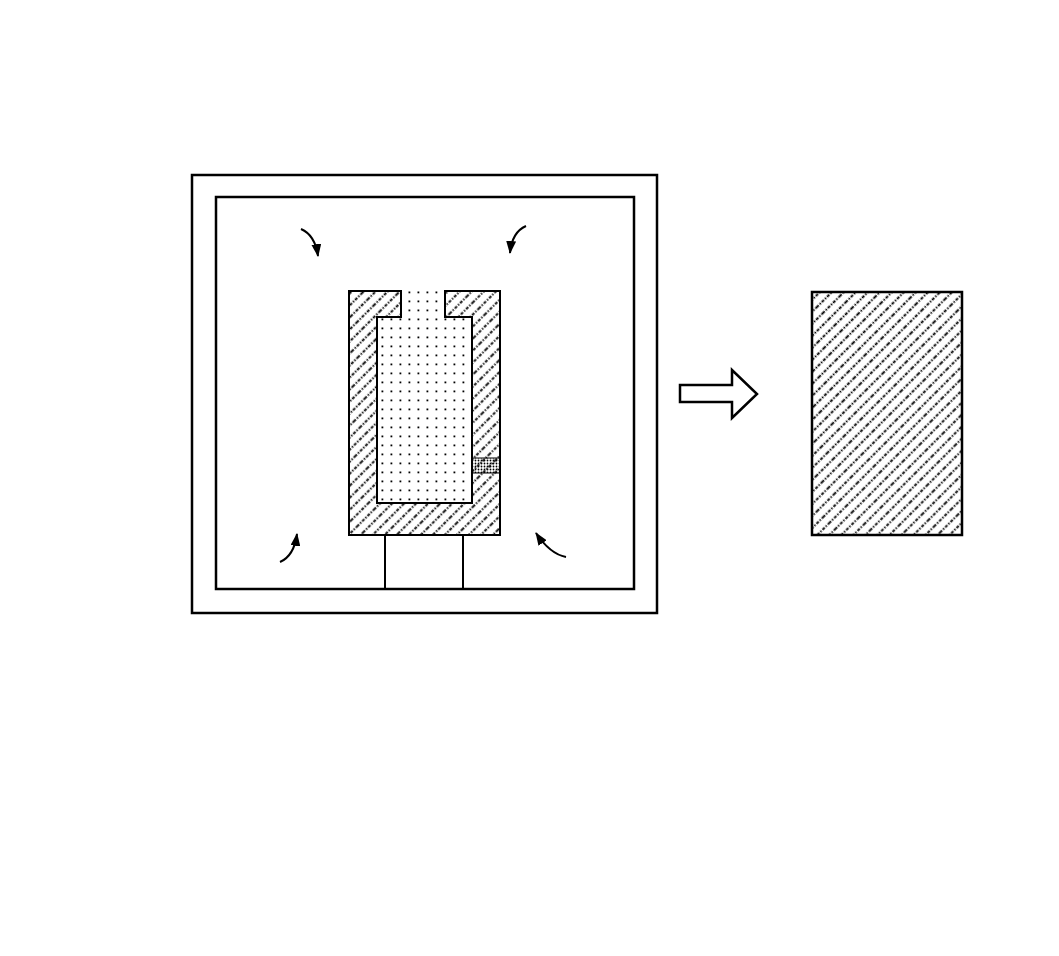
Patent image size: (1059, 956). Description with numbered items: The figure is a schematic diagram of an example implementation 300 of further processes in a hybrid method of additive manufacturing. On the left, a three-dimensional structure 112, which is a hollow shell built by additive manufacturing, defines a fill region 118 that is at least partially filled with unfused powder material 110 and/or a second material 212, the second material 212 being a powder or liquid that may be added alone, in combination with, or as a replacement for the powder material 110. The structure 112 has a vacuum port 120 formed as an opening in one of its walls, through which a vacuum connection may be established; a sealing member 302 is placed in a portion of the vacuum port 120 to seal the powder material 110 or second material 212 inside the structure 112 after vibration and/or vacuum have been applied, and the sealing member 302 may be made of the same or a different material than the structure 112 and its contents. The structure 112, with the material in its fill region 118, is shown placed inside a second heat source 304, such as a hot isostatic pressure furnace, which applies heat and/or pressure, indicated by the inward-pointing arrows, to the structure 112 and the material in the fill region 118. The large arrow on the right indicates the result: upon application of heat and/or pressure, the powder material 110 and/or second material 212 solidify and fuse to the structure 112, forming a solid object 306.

The example implementation 300 is at (232, 45).
The second heat source 304 is at (643, 291).
The solid object 306 is at (943, 340).
The three-dimensional structure 112 is at (350, 368).
The powder material 110 is at (534, 413).
The second material 212 is at (465, 348).
The fill region 118 is at (405, 344).
The vacuum port 120 is at (455, 464).
The sealing member 302 is at (500, 466).